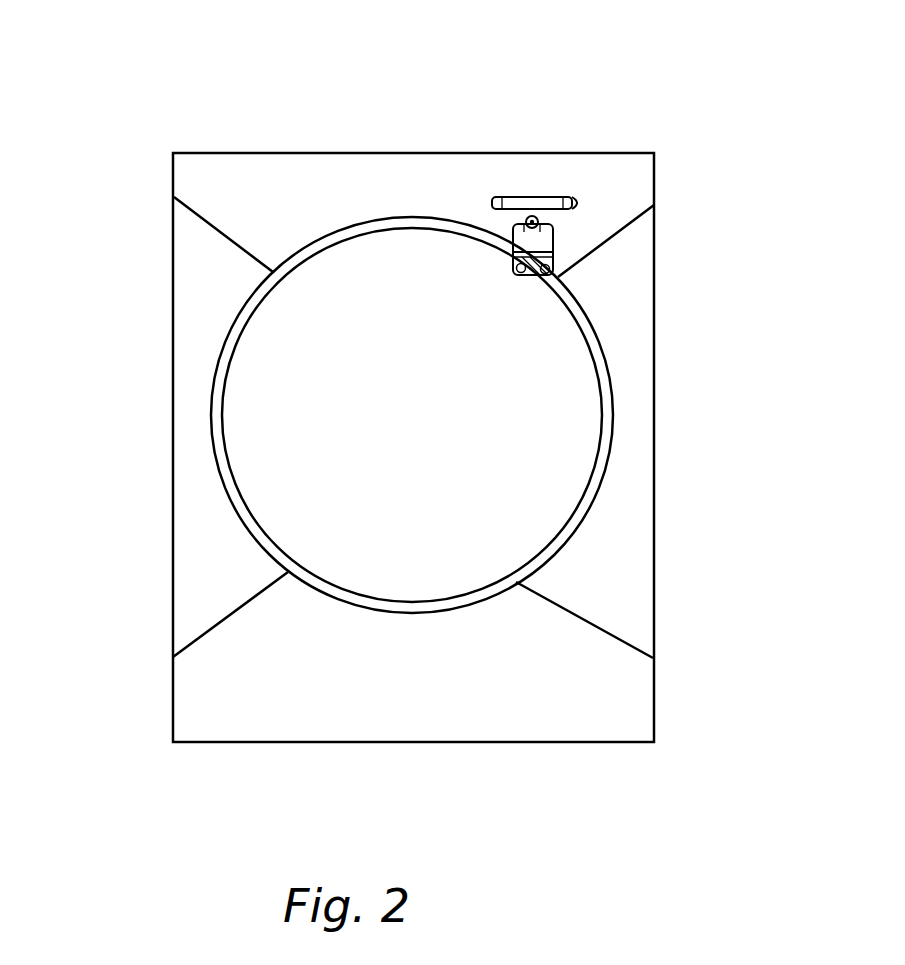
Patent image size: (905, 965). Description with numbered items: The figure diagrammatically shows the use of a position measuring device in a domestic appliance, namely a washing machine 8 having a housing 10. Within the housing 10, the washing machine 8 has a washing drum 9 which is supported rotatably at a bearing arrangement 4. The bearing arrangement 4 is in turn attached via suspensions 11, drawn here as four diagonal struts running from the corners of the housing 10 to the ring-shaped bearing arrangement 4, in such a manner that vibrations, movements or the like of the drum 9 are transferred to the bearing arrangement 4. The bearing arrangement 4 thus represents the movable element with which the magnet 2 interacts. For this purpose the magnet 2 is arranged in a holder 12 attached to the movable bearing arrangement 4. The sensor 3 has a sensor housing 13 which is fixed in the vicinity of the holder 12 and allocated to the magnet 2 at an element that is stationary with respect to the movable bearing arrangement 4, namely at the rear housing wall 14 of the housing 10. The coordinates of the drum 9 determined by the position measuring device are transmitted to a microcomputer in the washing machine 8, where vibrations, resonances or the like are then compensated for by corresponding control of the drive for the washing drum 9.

The magnet 2 is at (553, 222).
The sensor 3 is at (525, 187).
The bearing arrangement 4 is at (608, 405).
The washing machine 8 is at (382, 98).
The washing drum 9 is at (512, 478).
The housing 10 is at (260, 152).
The suspensions 11 is at (217, 230).
The holder 12 is at (557, 242).
The sensor housing 13 is at (537, 197).
The rear housing wall 14 is at (595, 185).